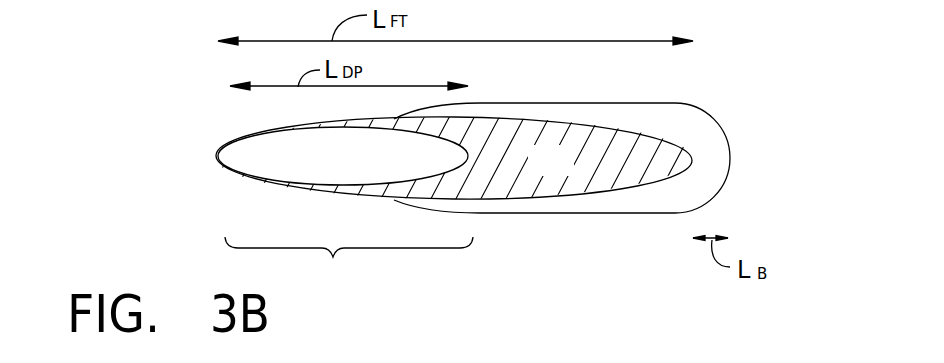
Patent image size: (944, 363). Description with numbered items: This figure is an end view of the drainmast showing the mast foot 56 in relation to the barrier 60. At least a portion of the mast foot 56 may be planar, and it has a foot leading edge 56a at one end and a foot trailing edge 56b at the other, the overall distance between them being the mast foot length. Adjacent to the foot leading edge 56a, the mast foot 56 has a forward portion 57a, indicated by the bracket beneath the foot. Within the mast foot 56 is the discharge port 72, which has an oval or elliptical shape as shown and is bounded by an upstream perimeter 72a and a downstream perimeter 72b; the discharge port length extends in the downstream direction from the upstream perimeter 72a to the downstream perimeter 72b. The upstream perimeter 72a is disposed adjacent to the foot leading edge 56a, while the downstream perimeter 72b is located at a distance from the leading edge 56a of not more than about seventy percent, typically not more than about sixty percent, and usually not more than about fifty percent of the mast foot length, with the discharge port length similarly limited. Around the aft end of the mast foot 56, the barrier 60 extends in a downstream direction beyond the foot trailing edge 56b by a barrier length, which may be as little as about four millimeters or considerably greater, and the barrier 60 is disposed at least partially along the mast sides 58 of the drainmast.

The mast foot 56 is at (568, 172).
The foot leading edge 56a is at (200, 151).
The foot trailing edge 56b is at (675, 166).
The forward portion 57a is at (333, 257).
The mast sides 58 is at (543, 96).
The barrier 60 is at (709, 158).
The discharge port 72 is at (361, 171).
The upstream perimeter 72a is at (258, 158).
The downstream perimeter 72b is at (433, 158).